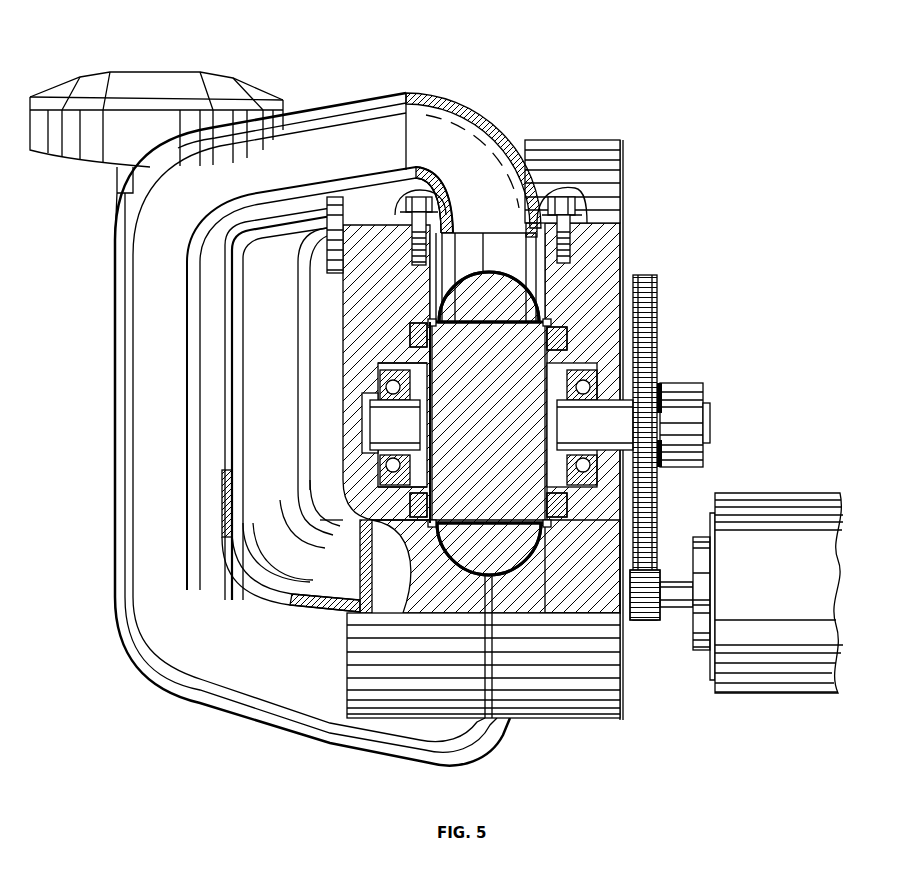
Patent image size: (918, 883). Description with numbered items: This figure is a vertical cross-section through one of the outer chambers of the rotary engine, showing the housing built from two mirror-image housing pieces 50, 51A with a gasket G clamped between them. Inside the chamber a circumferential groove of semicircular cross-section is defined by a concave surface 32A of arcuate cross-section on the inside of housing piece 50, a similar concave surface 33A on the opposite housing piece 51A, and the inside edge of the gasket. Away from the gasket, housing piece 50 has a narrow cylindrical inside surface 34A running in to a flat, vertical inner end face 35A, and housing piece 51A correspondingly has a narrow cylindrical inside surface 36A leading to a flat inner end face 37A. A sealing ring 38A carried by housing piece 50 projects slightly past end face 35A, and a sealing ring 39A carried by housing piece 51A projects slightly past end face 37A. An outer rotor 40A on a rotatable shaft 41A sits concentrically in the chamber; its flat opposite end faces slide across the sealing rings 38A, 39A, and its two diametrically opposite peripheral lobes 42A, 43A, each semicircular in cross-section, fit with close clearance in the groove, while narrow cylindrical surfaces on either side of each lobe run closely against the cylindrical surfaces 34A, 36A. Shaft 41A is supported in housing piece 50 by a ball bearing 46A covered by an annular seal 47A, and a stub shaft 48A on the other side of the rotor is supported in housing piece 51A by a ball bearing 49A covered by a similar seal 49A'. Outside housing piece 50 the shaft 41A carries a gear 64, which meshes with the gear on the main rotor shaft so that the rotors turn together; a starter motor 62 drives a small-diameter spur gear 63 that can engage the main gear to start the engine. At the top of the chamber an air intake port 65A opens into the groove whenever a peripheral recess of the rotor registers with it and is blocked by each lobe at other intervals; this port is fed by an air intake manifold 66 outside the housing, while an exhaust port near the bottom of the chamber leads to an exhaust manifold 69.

The housing piece 50 is at (207, 78).
The air intake manifold 66 is at (168, 417).
The exhaust manifold 69 is at (279, 417).
The housing piece 51A is at (370, 222).
The air intake port 65A is at (516, 233).
The peripheral lobe 42A is at (563, 296).
The sealing ring 38A is at (570, 288).
The sealing ring 39A is at (426, 310).
The concave surface 33A is at (471, 299).
The seal 49A' is at (399, 401).
The concave surface 32A is at (490, 322).
The cylindrical inside surface 36A is at (438, 352).
The annular seal 47A is at (585, 350).
The ball bearing 49A is at (387, 419).
The cylindrical inside surface 34A is at (531, 356).
The inner end face 37A is at (432, 388).
The inner end face 35A is at (548, 400).
The stub shaft 48A is at (410, 436).
The rotatable shaft 41A is at (608, 436).
The outer rotor 40A is at (505, 447).
The ball bearing 46A is at (582, 490).
The peripheral lobe 43A is at (503, 567).
The gap G is at (466, 588).
The gear 64 is at (658, 308).
The spur gear 63 is at (642, 620).
The starter motor 62 is at (784, 576).